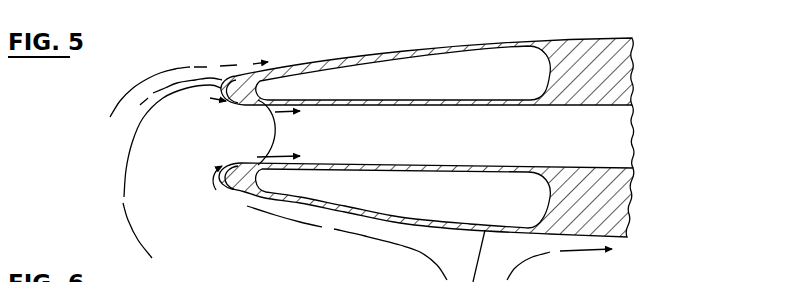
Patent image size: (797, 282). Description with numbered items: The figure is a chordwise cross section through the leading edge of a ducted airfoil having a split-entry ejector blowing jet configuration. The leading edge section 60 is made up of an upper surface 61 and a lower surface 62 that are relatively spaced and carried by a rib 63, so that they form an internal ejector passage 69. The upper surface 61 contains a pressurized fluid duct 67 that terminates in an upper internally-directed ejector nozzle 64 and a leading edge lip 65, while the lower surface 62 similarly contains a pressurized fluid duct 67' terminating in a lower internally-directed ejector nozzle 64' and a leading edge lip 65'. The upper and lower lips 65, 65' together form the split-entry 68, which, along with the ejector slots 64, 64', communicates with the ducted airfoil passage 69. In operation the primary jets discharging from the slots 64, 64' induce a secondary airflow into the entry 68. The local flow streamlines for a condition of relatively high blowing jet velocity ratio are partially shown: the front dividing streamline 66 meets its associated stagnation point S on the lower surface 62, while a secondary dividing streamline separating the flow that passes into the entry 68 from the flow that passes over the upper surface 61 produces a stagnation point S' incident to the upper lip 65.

The split-entry type of leading edge section 60 is at (448, 140).
The upper surface 61 is at (427, 56).
The lower surface 62 is at (446, 221).
The rib 63 is at (608, 137).
The upper internally-directed ejector nozzle 64 is at (250, 62).
The lower internally-directed ejector nozzle 64' is at (222, 201).
The leading edge lip 65 is at (199, 114).
The leading edge lip 65' is at (193, 187).
The front dividing streamline 66 is at (478, 266).
The pressurized fluid duct 67 is at (403, 58).
The pressurized fluid duct 67' is at (403, 213).
The split-entry 68 is at (250, 128).
The internal ejector passage 69 is at (363, 134).
The stagnation point S is at (367, 182).
The stagnation point S' is at (189, 70).